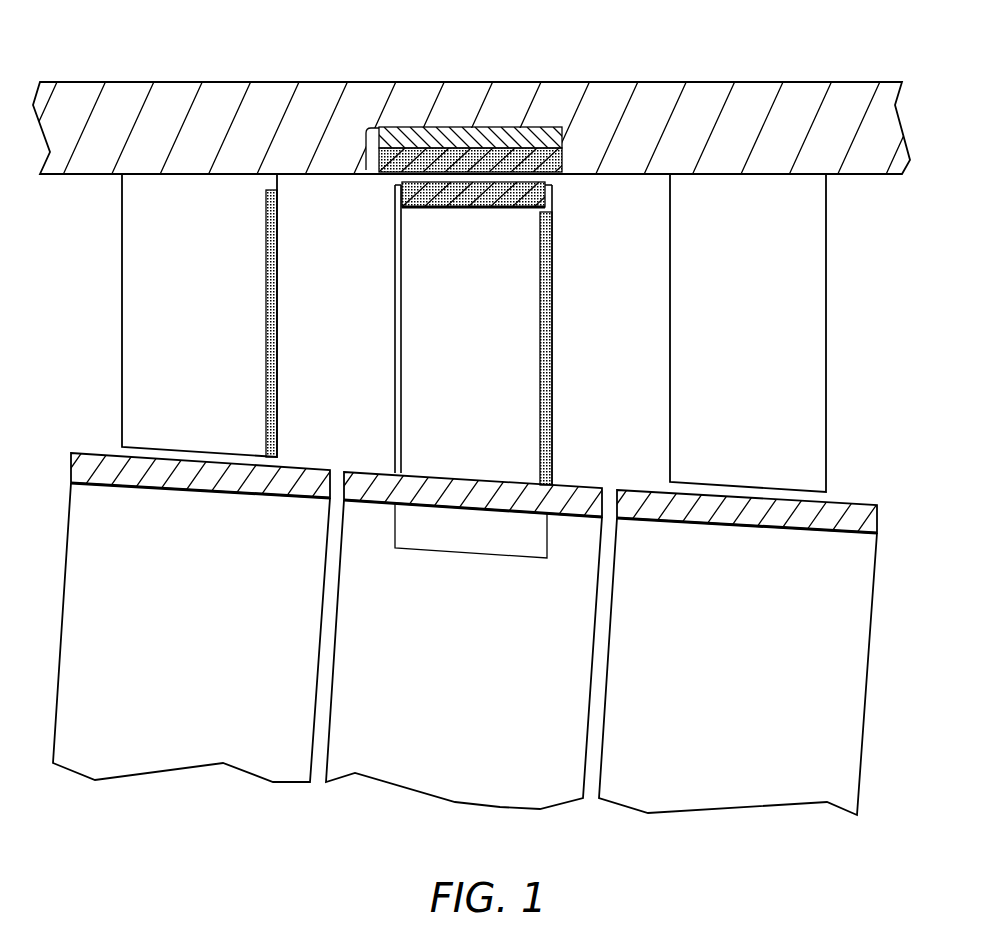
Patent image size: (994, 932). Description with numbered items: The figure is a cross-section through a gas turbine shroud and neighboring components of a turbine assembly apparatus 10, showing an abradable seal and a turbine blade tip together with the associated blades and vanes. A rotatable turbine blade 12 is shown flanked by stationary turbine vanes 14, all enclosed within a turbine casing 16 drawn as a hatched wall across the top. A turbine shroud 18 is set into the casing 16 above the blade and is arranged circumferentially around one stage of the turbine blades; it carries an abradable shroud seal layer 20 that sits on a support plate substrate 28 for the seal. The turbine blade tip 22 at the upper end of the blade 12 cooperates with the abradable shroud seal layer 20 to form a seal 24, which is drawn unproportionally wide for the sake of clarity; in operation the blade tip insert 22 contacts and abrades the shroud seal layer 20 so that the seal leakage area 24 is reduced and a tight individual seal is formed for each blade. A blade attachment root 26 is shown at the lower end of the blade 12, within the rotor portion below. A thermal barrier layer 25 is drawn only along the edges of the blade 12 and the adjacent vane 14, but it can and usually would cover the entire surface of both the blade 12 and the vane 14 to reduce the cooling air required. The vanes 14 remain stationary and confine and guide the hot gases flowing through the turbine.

The turbine assembly apparatus 10 is at (110, 43).
The turbine blade 12 is at (527, 348).
The turbine vane 14 is at (138, 342).
The turbine casing 16 is at (175, 81).
The turbine shroud 18 is at (366, 150).
The abradable shroud seal layer 20 is at (557, 158).
The turbine blade tip 22 is at (435, 208).
The seal 24 is at (397, 177).
The thermal barrier layer 25 is at (280, 317).
The blade attachment root 26 is at (457, 537).
The support plate substrate 28 is at (490, 134).